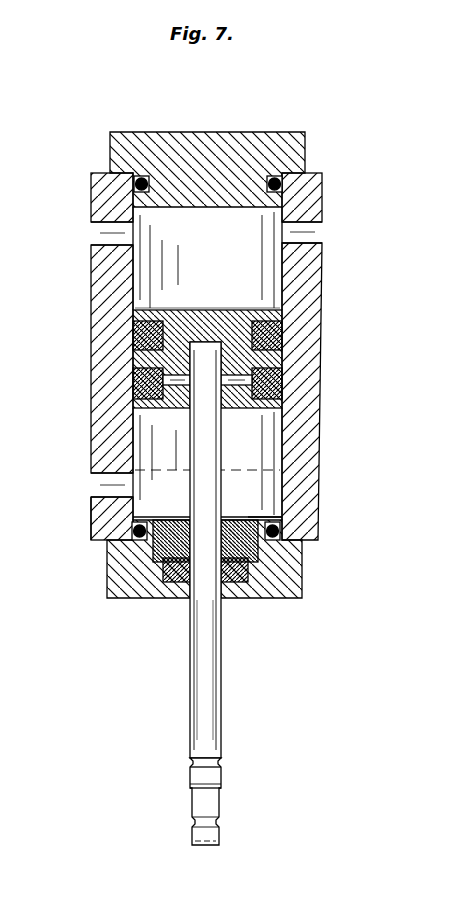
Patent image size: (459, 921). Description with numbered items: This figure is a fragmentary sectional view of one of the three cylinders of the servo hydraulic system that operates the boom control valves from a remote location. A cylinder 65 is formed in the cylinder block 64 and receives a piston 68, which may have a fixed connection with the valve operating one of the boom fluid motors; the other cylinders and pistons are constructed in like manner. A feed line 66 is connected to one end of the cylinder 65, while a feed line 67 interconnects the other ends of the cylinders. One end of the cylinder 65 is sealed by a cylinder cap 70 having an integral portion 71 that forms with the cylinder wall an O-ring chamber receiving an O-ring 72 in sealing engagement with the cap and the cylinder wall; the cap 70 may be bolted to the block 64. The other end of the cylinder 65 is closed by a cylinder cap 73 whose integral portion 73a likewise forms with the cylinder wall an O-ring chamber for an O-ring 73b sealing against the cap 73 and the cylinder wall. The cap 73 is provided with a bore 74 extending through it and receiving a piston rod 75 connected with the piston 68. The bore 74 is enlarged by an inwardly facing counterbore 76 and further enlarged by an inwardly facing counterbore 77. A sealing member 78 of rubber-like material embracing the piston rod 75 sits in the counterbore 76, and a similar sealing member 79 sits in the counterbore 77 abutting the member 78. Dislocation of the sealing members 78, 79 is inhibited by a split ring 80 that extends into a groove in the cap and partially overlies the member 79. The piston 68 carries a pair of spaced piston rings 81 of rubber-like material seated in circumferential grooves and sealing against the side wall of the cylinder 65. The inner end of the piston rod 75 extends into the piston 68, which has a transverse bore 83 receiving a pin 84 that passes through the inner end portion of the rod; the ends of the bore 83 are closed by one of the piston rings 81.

The cylinder block 64 is at (97, 185).
The cylinder 65 is at (245, 287).
The feed line 66 is at (93, 497).
The feed line 67 is at (97, 240).
The piston 68 is at (186, 323).
The cylinder cap 70 is at (248, 143).
The integral portion 71 is at (252, 195).
The O-ring 72 is at (285, 180).
The cylinder cap 73 is at (295, 591).
The integral portion 73a is at (262, 522).
The O-ring 73b is at (275, 536).
The bore 74 is at (225, 586).
The piston rod 75 is at (208, 661).
The counterbore 76 is at (160, 574).
The counterbore 77 is at (157, 543).
The sealing member 78 is at (185, 584).
The sealing member 79 is at (170, 522).
The split ring 80 is at (97, 517).
The piston rings 81 is at (287, 337).
The transverse bore 83 is at (227, 406).
The pin 84 is at (192, 406).